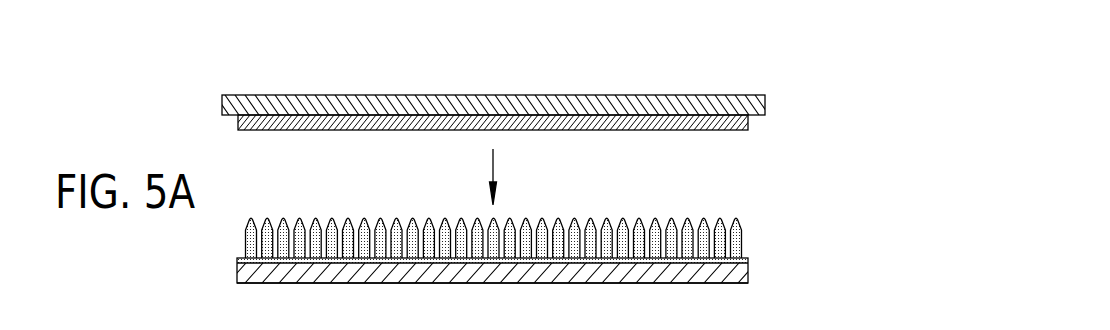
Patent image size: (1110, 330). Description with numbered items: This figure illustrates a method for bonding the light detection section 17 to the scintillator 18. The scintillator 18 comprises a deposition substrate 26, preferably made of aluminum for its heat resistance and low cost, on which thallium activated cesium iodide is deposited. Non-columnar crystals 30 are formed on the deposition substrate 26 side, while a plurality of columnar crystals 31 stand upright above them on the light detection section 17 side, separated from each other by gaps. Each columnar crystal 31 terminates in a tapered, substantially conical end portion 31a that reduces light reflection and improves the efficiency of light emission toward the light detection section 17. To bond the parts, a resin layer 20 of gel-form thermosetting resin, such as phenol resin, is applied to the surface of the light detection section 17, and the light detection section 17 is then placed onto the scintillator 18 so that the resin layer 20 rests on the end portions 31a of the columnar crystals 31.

The light detection section 17 is at (753, 105).
The resin layer 20 is at (752, 118).
The scintillator 18 is at (536, 244).
The columnar crystals 31 is at (745, 238).
The end portion 31a is at (740, 220).
The non-columnar crystals 30 is at (746, 263).
The deposition substrate 26 is at (668, 283).